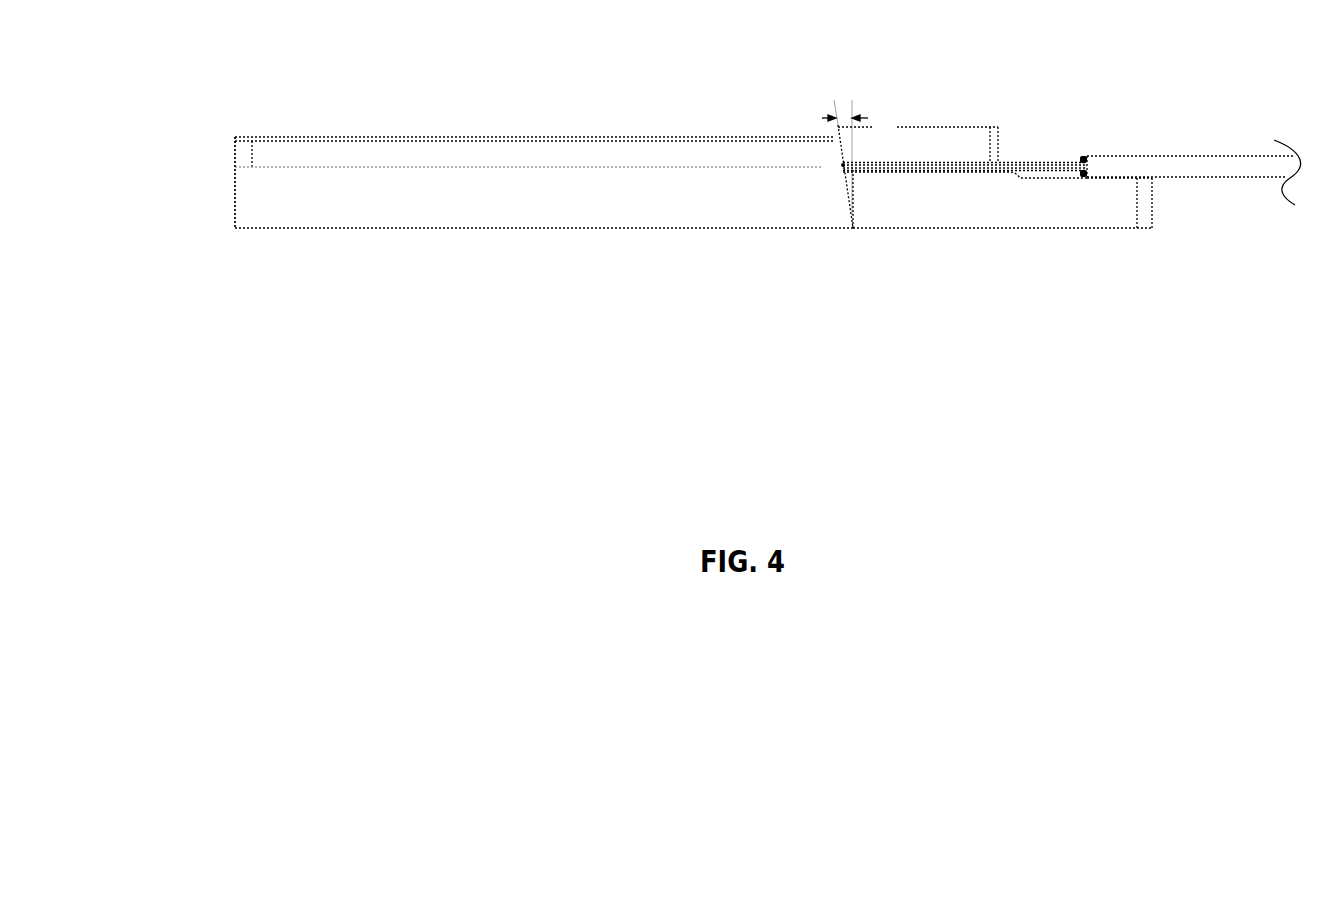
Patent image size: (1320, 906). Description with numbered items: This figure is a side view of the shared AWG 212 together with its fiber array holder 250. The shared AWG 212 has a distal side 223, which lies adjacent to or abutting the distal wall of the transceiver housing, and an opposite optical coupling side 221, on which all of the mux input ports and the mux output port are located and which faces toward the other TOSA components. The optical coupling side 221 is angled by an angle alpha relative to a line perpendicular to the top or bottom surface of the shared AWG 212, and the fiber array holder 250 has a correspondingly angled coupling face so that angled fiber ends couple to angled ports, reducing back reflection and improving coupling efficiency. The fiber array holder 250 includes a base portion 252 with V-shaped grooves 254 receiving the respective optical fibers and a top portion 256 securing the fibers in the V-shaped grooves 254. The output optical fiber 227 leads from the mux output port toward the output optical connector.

The shared AWG 212 is at (372, 182).
The distal side 223 is at (235, 178).
The optical coupling side 221 is at (853, 209).
The fiber array holder 250 is at (913, 110).
The top portion 256 is at (955, 135).
The V-shaped grooves 254 is at (868, 172).
The base portion 252 is at (972, 220).
The output optical fiber 227 is at (1033, 163).